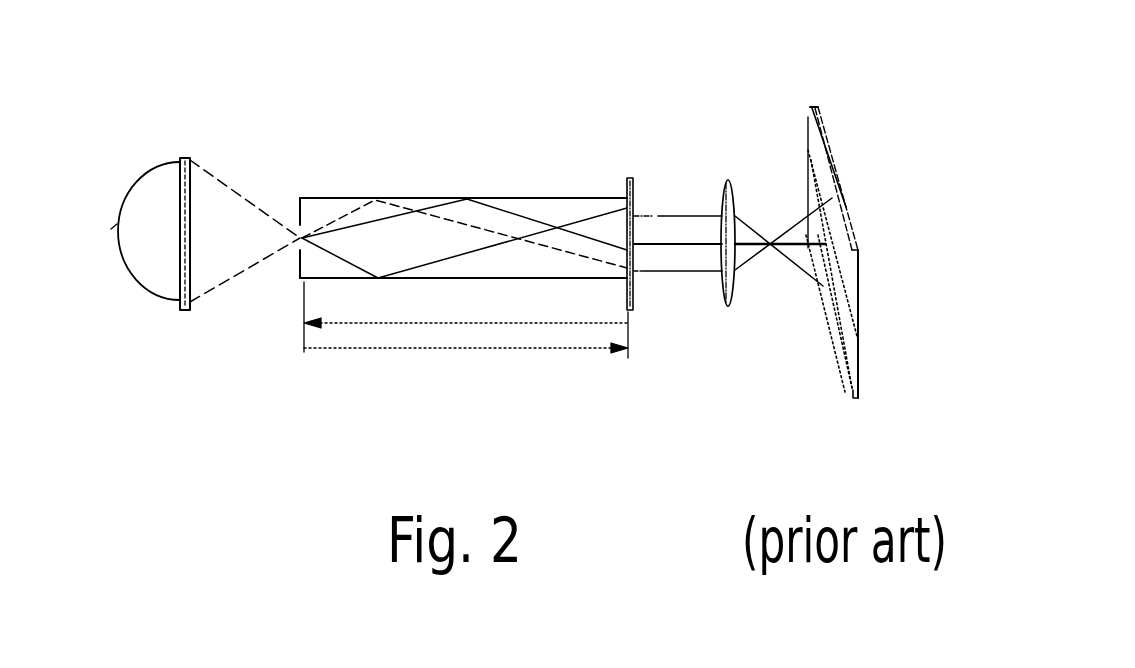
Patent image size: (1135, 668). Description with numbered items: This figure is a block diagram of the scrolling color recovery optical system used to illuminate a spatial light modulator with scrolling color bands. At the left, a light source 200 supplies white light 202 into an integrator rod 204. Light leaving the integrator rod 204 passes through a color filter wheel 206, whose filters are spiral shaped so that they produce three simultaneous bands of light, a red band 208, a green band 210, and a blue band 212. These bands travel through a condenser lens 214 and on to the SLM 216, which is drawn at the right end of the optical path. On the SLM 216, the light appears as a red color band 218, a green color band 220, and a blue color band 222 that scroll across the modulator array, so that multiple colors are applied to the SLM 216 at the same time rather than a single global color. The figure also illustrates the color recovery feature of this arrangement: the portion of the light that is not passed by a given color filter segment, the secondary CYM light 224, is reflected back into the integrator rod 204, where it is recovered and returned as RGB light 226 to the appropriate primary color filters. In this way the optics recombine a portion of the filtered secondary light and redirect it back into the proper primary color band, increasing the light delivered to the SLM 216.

The light source 200 is at (136, 285).
The white light 202 is at (233, 277).
The integrator rod 204 is at (340, 197).
The color filter wheel 206 is at (627, 180).
The red band of light 208 is at (650, 213).
The green band of light 210 is at (680, 246).
The blue band of light 212 is at (658, 273).
The condenser lens 214 is at (733, 307).
The SLM 216 is at (812, 105).
The red color band 218 is at (847, 352).
The green color band 220 is at (842, 310).
The blue color band 222 is at (817, 153).
The secondary CYM light 224 is at (532, 326).
The RGB light 226 is at (457, 350).